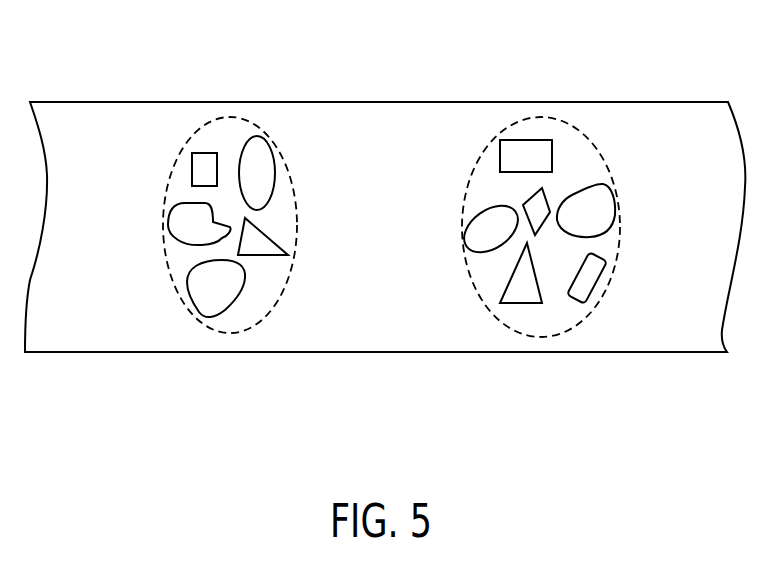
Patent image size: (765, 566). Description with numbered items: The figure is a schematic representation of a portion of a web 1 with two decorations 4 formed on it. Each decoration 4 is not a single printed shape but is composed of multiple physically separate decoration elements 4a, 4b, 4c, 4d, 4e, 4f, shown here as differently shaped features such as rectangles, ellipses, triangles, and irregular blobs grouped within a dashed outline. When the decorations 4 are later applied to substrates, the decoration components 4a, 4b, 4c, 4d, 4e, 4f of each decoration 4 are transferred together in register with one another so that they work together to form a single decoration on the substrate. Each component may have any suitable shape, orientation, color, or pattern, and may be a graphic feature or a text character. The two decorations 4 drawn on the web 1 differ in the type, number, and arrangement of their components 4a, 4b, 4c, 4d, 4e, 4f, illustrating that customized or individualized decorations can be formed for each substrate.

The web 1 is at (375, 102).
The decoration 4 is at (165, 213).
The decoration element 4a is at (192, 164).
The decoration element 4b is at (275, 171).
The decoration element 4c is at (279, 243).
The decoration element 4d is at (191, 296).
The decoration element 4e is at (170, 223).
The decoration element 4f is at (468, 241).